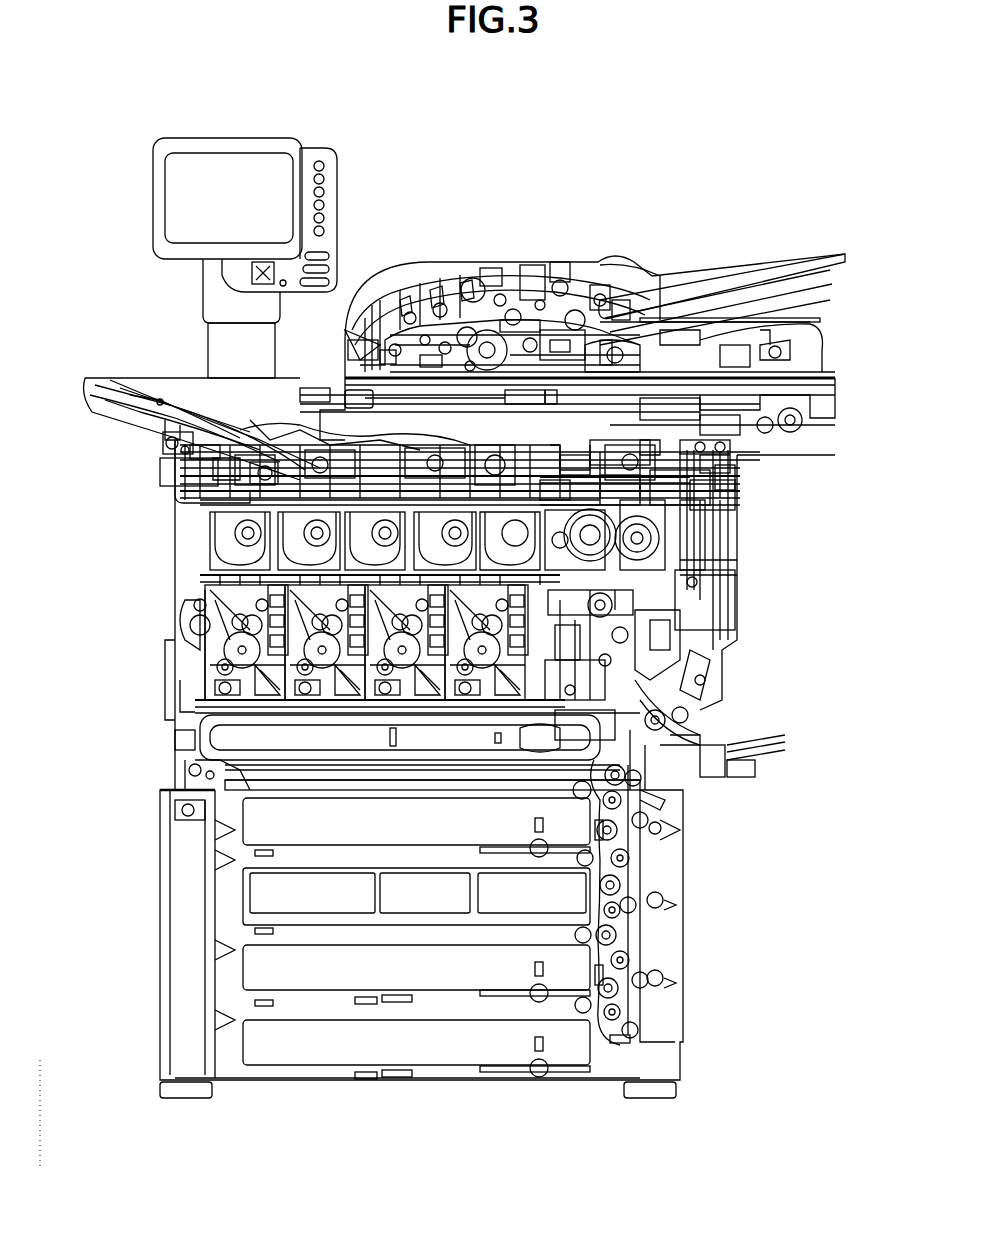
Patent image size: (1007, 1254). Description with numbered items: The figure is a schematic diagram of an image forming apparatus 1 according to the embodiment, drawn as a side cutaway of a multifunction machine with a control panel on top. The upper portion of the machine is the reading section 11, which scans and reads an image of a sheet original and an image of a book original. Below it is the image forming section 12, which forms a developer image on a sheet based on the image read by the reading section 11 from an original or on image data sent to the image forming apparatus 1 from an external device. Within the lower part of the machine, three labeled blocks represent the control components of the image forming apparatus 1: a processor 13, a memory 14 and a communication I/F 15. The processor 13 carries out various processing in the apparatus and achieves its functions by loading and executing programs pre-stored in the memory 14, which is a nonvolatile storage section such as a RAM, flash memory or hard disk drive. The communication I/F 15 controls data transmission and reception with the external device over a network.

The image forming apparatus 1 is at (672, 172).
The reading section 11 is at (858, 253).
The image forming section 12 is at (858, 455).
The processor 13 is at (315, 914).
The memory 14 is at (415, 916).
The communication I/F 15 is at (485, 916).